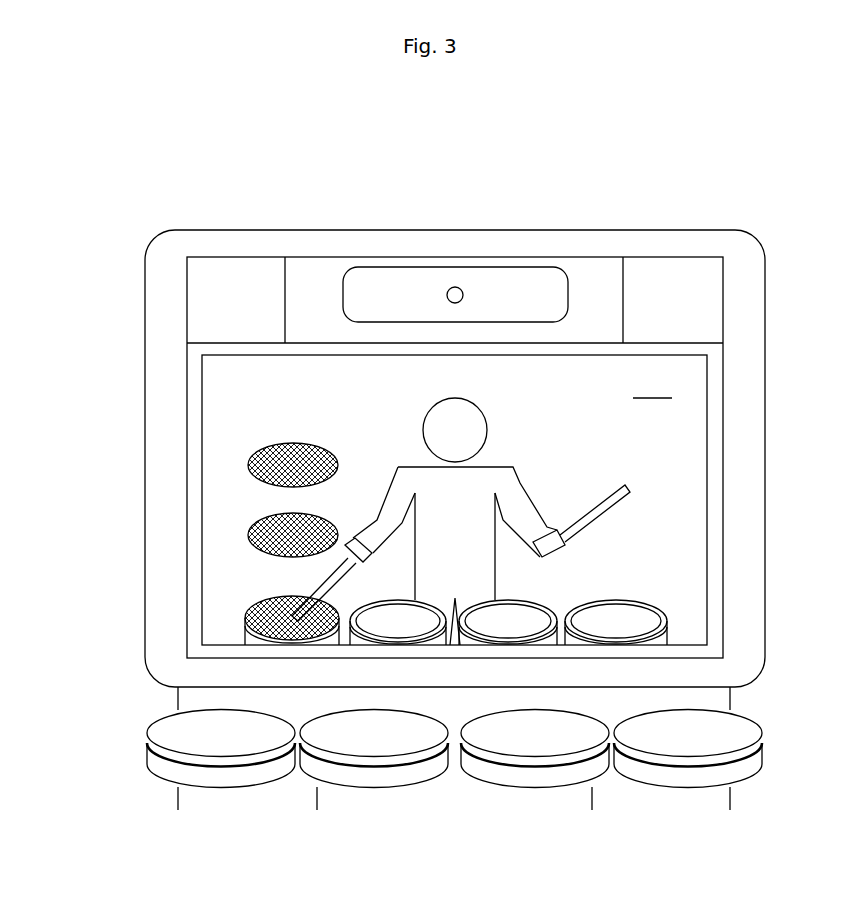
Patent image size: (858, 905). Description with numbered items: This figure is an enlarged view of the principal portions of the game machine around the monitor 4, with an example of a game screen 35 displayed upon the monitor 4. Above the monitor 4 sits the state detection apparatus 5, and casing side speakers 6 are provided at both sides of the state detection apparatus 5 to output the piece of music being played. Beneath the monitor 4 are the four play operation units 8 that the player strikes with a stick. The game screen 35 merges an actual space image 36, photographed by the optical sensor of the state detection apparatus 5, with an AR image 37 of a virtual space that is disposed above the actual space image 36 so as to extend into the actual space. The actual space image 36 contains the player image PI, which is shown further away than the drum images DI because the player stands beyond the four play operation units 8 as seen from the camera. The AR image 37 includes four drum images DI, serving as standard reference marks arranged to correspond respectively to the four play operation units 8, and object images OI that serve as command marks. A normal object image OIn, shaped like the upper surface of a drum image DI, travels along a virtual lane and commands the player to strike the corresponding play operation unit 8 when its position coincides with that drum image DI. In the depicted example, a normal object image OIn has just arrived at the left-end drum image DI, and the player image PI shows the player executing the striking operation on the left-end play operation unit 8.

The monitor 4 is at (730, 392).
The state detection apparatus 5 is at (507, 262).
The casing side speakers 6 is at (680, 257).
The play operation units 8 is at (220, 760).
The game screen 35 is at (707, 473).
The actual space image 36 is at (652, 386).
The AR image 37 is at (243, 437).
The object image OI is at (215, 490).
The normal object image OIn is at (256, 610).
The player image PI is at (485, 418).
The drum images DI is at (385, 600).